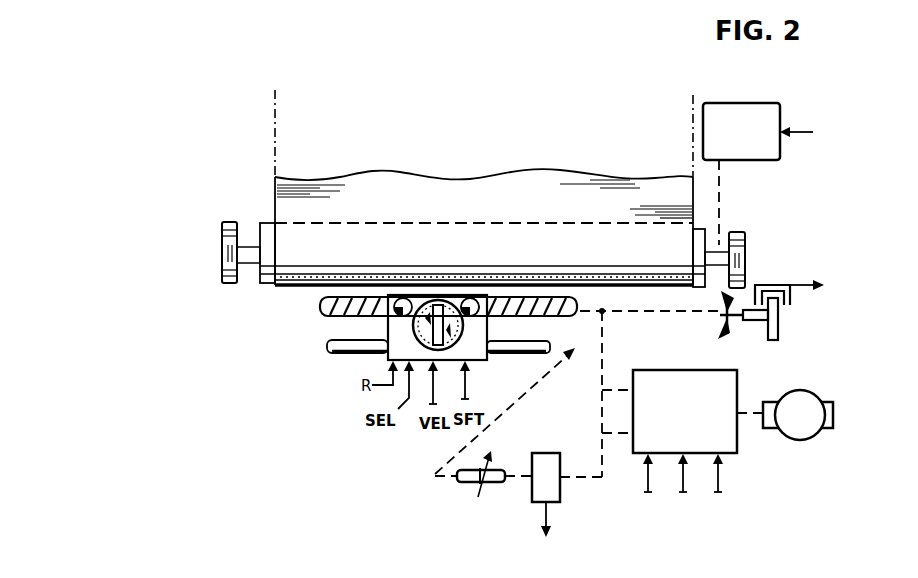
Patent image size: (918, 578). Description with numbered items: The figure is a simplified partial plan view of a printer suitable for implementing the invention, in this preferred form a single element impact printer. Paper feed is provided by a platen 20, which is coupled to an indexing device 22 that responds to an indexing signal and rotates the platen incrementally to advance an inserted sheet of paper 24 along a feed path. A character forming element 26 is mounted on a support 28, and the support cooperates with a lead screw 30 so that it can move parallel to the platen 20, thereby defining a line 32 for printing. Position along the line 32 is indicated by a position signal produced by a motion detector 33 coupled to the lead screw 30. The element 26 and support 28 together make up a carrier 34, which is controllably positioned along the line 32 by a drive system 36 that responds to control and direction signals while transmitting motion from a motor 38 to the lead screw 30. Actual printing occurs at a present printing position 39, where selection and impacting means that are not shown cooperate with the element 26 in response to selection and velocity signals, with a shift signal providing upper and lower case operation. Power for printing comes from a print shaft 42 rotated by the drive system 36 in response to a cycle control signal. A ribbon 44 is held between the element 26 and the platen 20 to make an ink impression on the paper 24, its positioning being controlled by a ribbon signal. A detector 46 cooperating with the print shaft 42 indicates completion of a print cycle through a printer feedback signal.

The platen 20 is at (262, 228).
The indexing device 22 is at (760, 103).
The sheet of paper 24 is at (573, 172).
The character forming element 26 is at (425, 343).
The support 28 is at (485, 361).
The lead screw 30 is at (320, 311).
The line 32 is at (330, 274).
The motion detector 33 is at (796, 311).
The carrier 34 is at (500, 335).
The drive system 36 is at (737, 392).
The motor 38 is at (806, 440).
The present printing position 39 is at (441, 297).
The print shaft 42 is at (330, 353).
The ribbon 44 is at (474, 299).
The detector 46 is at (545, 455).